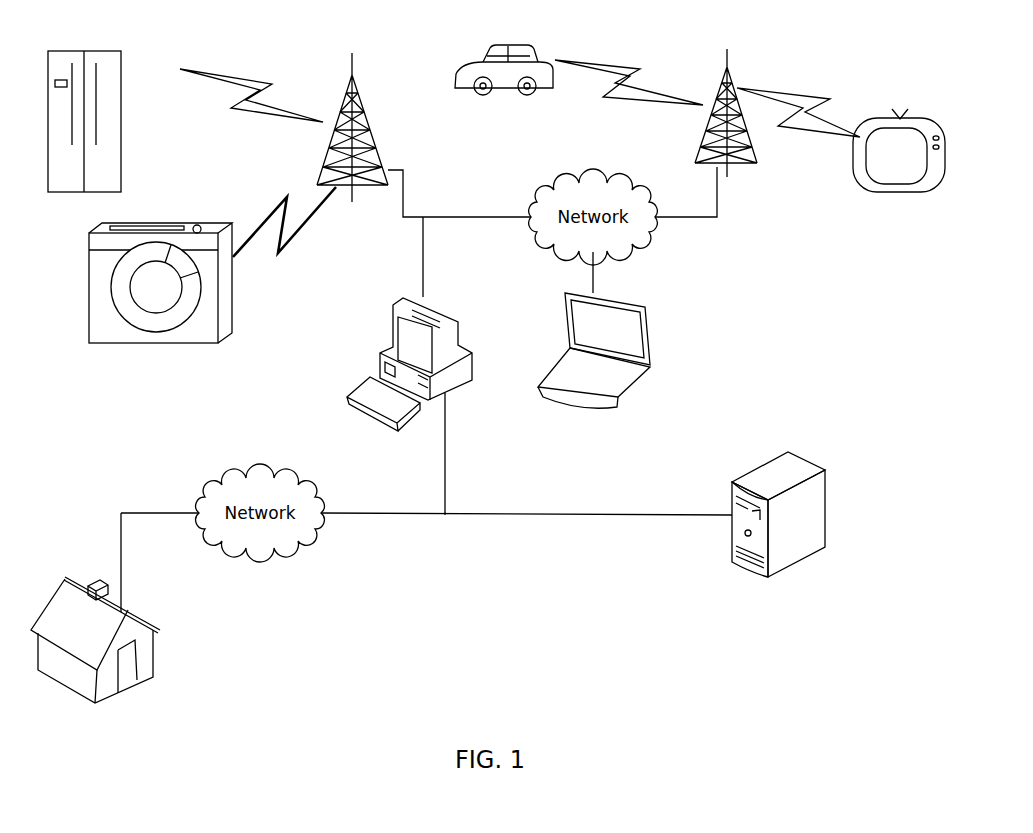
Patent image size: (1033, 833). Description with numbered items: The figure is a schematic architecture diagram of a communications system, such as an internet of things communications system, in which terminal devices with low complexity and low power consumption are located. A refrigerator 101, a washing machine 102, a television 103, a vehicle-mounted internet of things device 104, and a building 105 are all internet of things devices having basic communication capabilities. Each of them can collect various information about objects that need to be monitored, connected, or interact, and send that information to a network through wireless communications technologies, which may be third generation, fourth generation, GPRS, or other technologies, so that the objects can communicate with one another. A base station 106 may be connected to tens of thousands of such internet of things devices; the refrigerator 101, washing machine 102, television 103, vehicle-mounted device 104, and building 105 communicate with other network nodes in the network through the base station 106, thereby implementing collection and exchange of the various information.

The refrigerator 101 is at (90, 48).
The washing machine 102 is at (118, 220).
The television 103 is at (920, 118).
The vehicle-mounted internet of things device 104 is at (505, 42).
The building 105 is at (127, 612).
The base station 106 is at (355, 70).